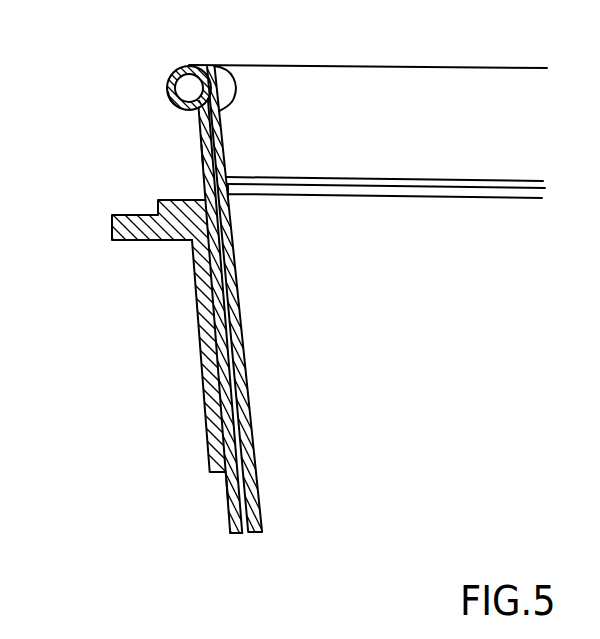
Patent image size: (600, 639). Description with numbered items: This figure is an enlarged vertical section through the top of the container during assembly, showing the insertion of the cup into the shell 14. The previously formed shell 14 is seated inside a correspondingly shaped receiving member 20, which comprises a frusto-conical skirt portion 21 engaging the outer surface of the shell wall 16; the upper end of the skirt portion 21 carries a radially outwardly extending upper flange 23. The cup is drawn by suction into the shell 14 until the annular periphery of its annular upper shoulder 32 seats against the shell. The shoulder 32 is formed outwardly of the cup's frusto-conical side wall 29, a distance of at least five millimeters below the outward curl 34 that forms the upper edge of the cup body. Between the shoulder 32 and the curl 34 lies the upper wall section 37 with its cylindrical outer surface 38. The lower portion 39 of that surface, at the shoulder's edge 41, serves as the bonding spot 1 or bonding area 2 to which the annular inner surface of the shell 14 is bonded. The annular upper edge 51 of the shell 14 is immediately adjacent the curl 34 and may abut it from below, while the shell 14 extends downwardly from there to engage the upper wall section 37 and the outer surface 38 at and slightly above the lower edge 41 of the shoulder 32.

The bonding spot 1 is at (258, 310).
The bonding area 2 is at (258, 310).
The cylindrical outer surface 38 is at (186, 137).
The outward curl 34 is at (181, 67).
The upper wall section 37 is at (234, 72).
The annular upper edge of the shell 51 is at (183, 115).
The lower portion of the surface 39 is at (201, 156).
The annular upper shoulder 32 is at (218, 160).
The shoulder's edge 41 is at (231, 218).
The frusto-conical side wall 29 is at (242, 327).
The upper flange 23 is at (153, 241).
The frusto-conical skirt portion 21 is at (197, 314).
The receiving member 20 is at (248, 340).
The outer shell 14 is at (222, 492).
The shell wall 16 is at (233, 528).